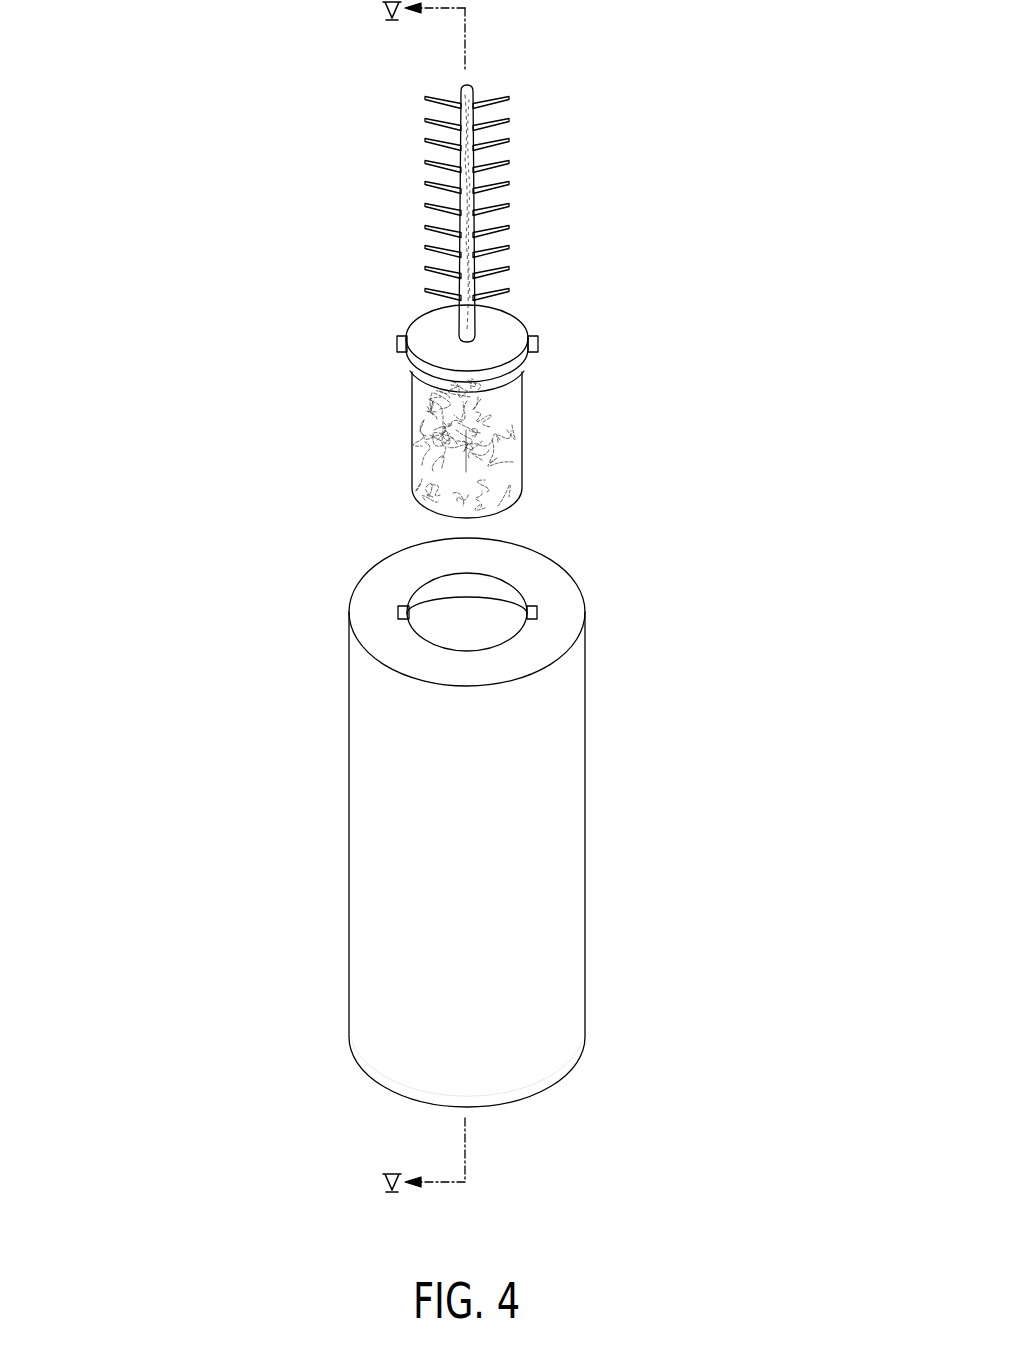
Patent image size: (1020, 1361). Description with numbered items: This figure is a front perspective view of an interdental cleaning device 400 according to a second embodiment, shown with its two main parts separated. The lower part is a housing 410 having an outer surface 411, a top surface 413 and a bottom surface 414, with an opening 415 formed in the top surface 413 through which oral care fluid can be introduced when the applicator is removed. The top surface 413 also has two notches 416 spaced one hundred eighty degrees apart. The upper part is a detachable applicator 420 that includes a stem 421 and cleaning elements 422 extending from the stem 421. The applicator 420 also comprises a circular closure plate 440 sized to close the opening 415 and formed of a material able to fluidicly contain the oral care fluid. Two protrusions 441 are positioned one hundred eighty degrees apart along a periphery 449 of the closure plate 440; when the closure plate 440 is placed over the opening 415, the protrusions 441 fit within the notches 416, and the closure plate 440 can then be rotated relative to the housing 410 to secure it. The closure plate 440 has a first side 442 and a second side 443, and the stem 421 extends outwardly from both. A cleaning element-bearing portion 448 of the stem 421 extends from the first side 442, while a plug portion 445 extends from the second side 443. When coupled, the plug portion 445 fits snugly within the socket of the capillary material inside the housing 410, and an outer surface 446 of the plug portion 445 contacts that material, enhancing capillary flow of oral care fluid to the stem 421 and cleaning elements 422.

The interdental cleaning device 400 is at (133, 190).
The housing 410 is at (348, 720).
The outer surface 411 is at (368, 852).
The top surface 413 is at (567, 598).
The bottom surface 414 is at (562, 1077).
The opening 415 is at (497, 616).
The notches 416 is at (398, 612).
The applicator 420 is at (402, 182).
The stem 421 is at (483, 203).
The cleaning elements 422 is at (501, 100).
The closure plate 440 is at (515, 335).
The protrusions 441 is at (397, 347).
The first side 442 is at (430, 310).
The second side 443 is at (423, 402).
The plug portion 445 is at (457, 502).
The outer surface 446 is at (450, 438).
The cleaning element-bearing portion 448 is at (512, 149).
The periphery 449 is at (508, 372).